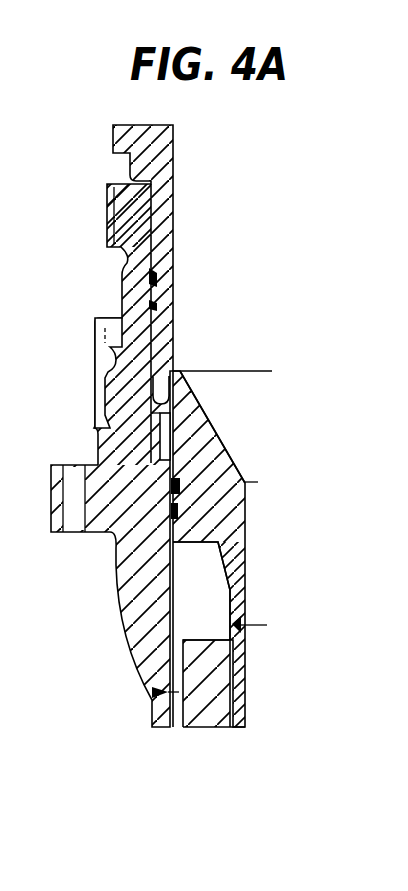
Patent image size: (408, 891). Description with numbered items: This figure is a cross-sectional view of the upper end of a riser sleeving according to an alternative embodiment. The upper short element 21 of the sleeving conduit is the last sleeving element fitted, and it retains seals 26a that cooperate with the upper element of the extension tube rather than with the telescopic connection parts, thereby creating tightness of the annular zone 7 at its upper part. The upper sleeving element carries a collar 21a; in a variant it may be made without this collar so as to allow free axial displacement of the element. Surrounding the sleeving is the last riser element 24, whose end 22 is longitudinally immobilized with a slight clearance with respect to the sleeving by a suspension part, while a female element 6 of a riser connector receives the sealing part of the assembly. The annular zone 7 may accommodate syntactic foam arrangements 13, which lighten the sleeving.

The end of riser element 22 is at (145, 380).
The upper short element of the sleeving conduit 21 is at (215, 455).
The collar 21a is at (162, 443).
The seals 26a is at (180, 484).
The annular zone 7 is at (207, 587).
The female element 6 is at (157, 651).
The last riser element 24 is at (160, 713).
The syntactic foam arrangements 13 is at (199, 711).